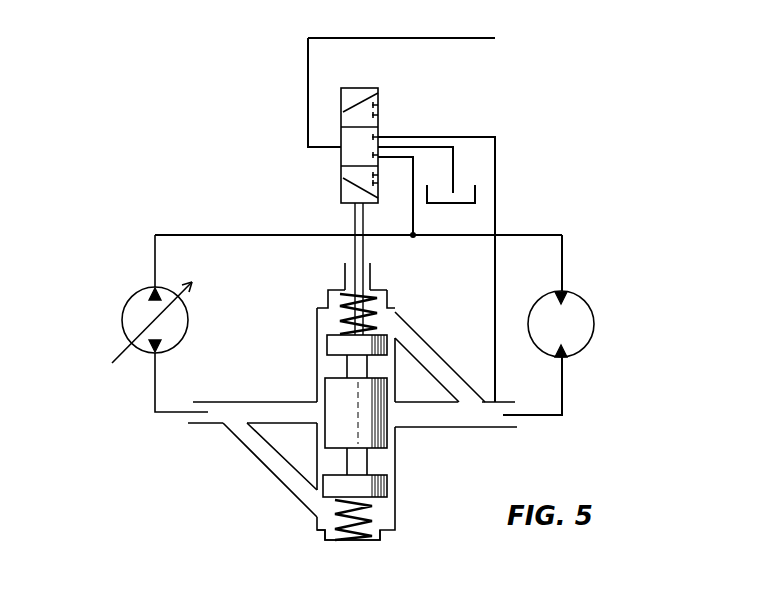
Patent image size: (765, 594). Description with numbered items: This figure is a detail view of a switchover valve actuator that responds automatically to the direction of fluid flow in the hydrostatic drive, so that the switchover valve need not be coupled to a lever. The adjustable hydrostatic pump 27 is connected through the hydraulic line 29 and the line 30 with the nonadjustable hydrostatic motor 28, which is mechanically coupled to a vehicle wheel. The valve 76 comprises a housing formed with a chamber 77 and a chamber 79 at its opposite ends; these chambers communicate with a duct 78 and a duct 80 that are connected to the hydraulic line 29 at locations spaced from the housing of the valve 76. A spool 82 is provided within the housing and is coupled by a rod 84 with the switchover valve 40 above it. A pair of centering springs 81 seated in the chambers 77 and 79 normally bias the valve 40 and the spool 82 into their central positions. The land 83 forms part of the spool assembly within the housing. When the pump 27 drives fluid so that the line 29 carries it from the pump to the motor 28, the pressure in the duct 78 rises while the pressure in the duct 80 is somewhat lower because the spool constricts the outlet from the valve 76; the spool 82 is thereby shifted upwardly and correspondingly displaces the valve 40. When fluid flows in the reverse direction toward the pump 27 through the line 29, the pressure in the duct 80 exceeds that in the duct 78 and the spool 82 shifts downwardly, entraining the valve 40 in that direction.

The hydrostatic pump 27 is at (130, 305).
The hydrostatic motor 28 is at (588, 330).
The hydraulic line 29 is at (562, 385).
The line 30 is at (562, 250).
The valve 40 is at (378, 92).
The valve 76 is at (393, 492).
The chamber 77 is at (327, 517).
The duct 78 is at (268, 460).
The chamber 79 is at (380, 302).
The duct 80 is at (433, 363).
The centering spring 81 is at (340, 315).
The spool 82 is at (372, 432).
The lower piston land 83 is at (385, 463).
The rod 84 is at (355, 220).